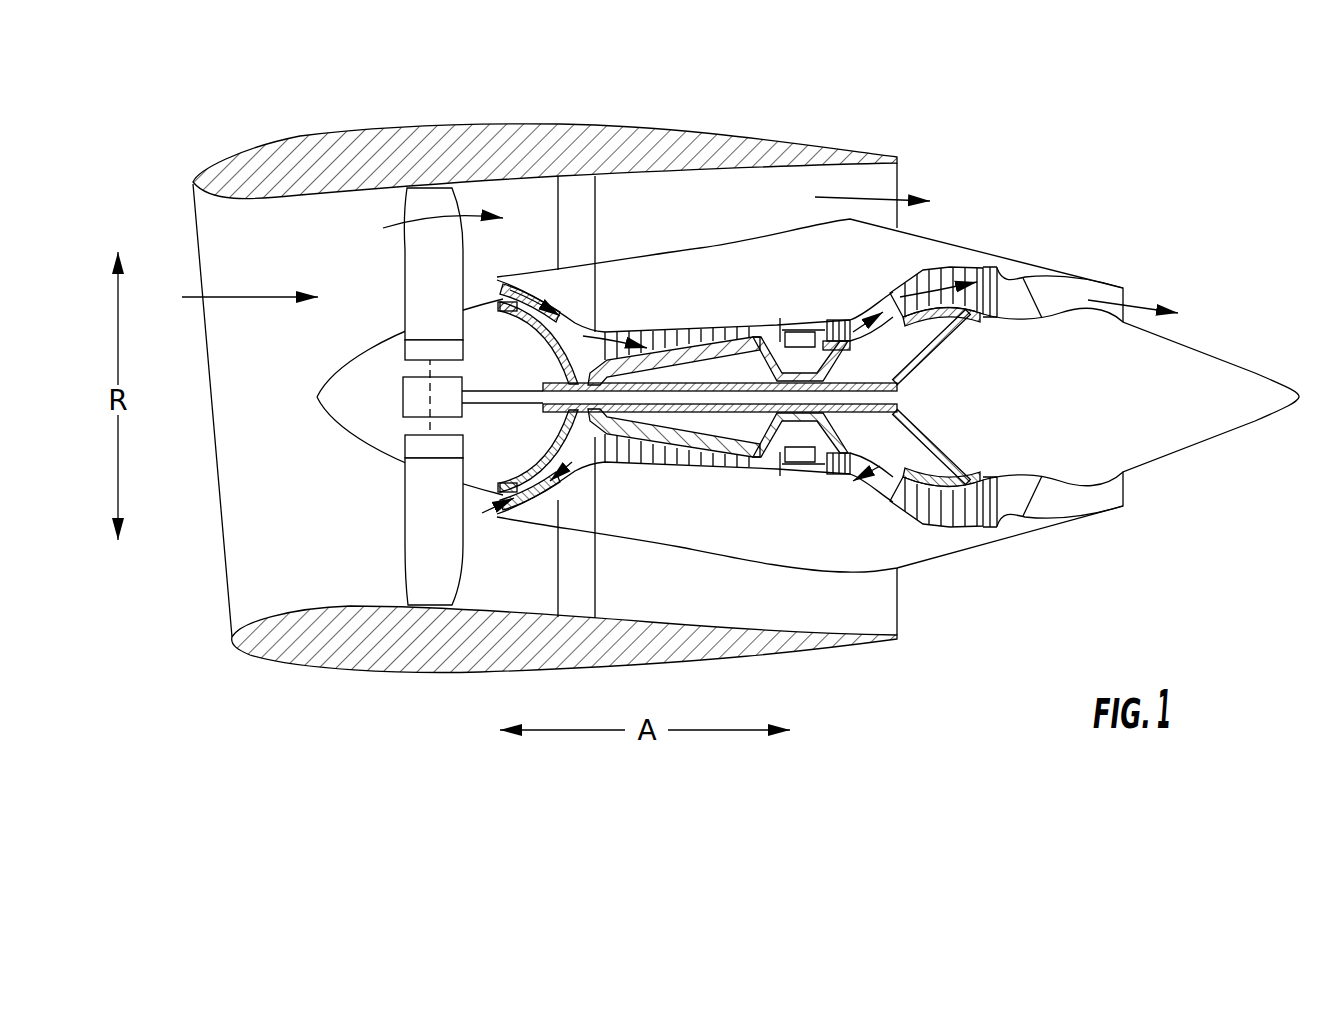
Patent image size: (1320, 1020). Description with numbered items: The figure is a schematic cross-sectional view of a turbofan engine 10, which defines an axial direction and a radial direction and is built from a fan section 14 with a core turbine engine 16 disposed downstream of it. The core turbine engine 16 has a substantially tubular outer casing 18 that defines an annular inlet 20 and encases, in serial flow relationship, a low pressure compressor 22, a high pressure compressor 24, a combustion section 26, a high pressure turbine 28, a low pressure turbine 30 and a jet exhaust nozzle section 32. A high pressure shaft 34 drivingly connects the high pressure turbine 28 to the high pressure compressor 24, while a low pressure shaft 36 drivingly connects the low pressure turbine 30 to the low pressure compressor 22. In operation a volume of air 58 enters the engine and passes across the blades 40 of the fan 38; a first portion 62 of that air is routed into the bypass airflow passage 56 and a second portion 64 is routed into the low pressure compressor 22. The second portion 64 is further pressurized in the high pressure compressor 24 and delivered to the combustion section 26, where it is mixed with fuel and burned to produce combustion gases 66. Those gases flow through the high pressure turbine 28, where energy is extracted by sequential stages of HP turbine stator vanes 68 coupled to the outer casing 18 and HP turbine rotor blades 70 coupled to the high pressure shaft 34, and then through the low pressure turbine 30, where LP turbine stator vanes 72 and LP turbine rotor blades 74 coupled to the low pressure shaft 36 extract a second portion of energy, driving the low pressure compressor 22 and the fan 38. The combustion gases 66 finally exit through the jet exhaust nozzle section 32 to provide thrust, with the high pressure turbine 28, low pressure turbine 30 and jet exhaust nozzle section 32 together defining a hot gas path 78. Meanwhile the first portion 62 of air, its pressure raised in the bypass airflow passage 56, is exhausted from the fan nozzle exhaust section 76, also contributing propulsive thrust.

The turbofan engine 10 is at (1041, 140).
The fan section 14 is at (364, 212).
The core turbine engine 16 is at (716, 283).
The outer casing 18 is at (757, 562).
The annular inlet 20 is at (497, 514).
The low pressure compressor 22 is at (560, 452).
The high pressure compressor 24 is at (625, 456).
The combustion section 26 is at (797, 463).
The high pressure turbine 28 is at (882, 465).
The low pressure turbine 30 is at (981, 531).
The jet exhaust nozzle section 32 is at (1040, 511).
The high pressure shaft 34 is at (836, 375).
The low pressure shaft 36 is at (918, 359).
The fan 38 is at (370, 450).
The fan blades 40 is at (402, 547).
The bypass airflow passage 56 is at (740, 220).
The volume of air 58 is at (247, 295).
The first portion of air 62 is at (418, 227).
The second portion of air 64 is at (495, 282).
The combustion gases 66 is at (938, 270).
The HP turbine stator vanes 68 is at (812, 465).
The HP turbine rotor blades 70 is at (905, 432).
The LP turbine stator vanes 72 is at (907, 510).
The LP turbine rotor blades 74 is at (917, 515).
The fan nozzle exhaust section 76 is at (887, 187).
The hot gas path 78 is at (885, 304).